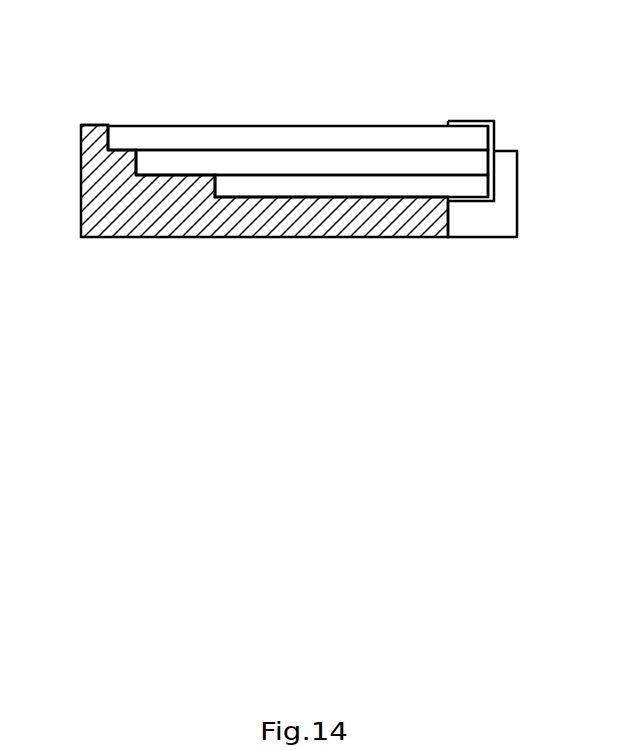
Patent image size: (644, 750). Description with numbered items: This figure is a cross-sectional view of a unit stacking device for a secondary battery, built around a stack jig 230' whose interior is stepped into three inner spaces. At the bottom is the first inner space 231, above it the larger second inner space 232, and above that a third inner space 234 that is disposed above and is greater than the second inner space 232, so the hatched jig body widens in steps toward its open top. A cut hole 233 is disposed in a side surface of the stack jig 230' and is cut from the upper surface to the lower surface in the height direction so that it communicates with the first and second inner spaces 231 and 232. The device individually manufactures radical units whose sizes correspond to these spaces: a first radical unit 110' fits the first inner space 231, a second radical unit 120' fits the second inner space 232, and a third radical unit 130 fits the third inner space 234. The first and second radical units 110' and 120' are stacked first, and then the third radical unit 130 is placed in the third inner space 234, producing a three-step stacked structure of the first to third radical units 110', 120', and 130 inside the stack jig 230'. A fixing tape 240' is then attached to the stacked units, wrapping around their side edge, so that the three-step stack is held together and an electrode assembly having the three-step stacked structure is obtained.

The stack jig 230' is at (322, 342).
The first inner space 231 is at (292, 198).
The second inner space 232 is at (180, 138).
The cut hole 233 is at (507, 173).
The third inner space 234 is at (121, 129).
The fixing tape 240' is at (473, 116).
The third radical unit 130 is at (367, 138).
The second radical unit 120' is at (312, 120).
The first radical unit 110' is at (351, 140).